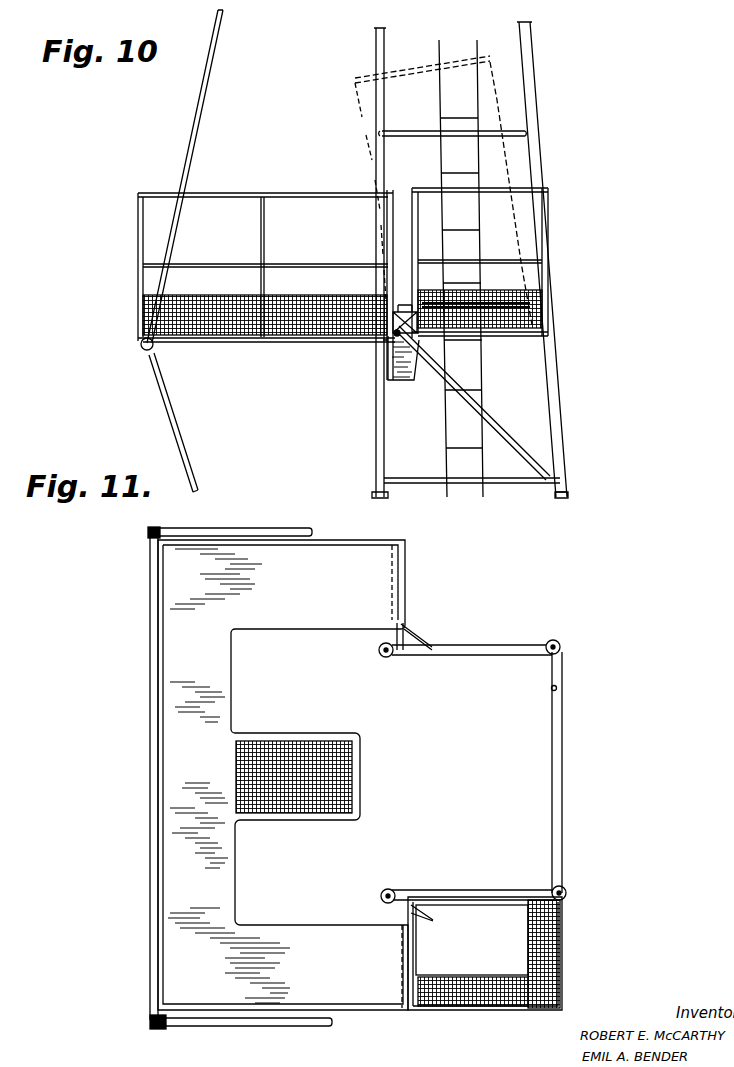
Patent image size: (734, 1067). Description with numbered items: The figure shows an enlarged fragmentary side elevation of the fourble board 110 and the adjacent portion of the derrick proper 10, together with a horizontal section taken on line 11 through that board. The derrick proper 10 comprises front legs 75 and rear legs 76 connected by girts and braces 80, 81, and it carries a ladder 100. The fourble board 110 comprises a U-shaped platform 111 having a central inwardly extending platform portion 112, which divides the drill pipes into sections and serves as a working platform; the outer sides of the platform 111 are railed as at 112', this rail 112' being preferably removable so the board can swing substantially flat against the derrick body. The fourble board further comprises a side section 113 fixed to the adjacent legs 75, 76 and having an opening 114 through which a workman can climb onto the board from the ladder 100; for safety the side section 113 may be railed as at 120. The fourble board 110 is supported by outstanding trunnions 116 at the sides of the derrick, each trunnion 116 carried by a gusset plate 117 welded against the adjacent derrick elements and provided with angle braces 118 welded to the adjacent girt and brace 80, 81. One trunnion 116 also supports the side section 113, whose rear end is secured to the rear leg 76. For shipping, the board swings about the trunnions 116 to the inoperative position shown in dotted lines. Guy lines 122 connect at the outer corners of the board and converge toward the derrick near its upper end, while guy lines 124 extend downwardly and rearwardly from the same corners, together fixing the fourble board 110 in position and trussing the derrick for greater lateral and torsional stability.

In FIG. 10, the derrick proper 10 is at (565, 412).
In FIG. 10, the section line 11— 11 is at (138, 176).
In FIG. 10, the front legs 75 is at (376, 55).
In FIG. 11, the front legs 75 is at (388, 663).
In FIG. 10, the rear legs 76 is at (556, 468).
In FIG. 11, the rear legs 76 is at (562, 646).
In FIG. 10, the girts and braces 80 is at (416, 478).
In FIG. 11, the girts and braces 80 is at (563, 787).
In FIG. 10, the girts and braces 81 is at (505, 433).
In FIG. 10, the ladder 100 is at (484, 371).
In FIG. 11, the ladder 100 is at (470, 904).
In FIG. 10, the fourble board 110 is at (367, 136).
In FIG. 11, the fourble board 110 is at (143, 796).
In FIG. 10, the U-shaped platform 111 is at (361, 150).
In FIG. 11, the U-shaped platform 111 is at (168, 627).
In FIG. 11, the central inwardly extending platform portion 112 is at (294, 757).
In FIG. 10, the rail 112' is at (386, 190).
In FIG. 11, the rail 112' is at (261, 1038).
In FIG. 10, the side section 113 is at (524, 332).
In FIG. 11, the side section 113 is at (553, 958).
In FIG. 11, the opening 114 is at (524, 953).
In FIG. 10, the trunnions 116 is at (395, 341).
In FIG. 11, the trunnions 116 is at (397, 633).
In FIG. 10, the gusset plate 117 is at (388, 366).
In FIG. 11, the gusset plate 117 is at (460, 643).
In FIG. 10, the angle braces 118 is at (405, 304).
In FIG. 11, the angle braces 118 is at (417, 629).
In FIG. 10, the rail 120 is at (545, 165).
In FIG. 11, the rail 120 is at (554, 1004).
In FIG. 10, the guy lines 122 is at (200, 102).
In FIG. 11, the guy lines 122 is at (277, 527).
In FIG. 10, the guy lines 124 is at (190, 478).